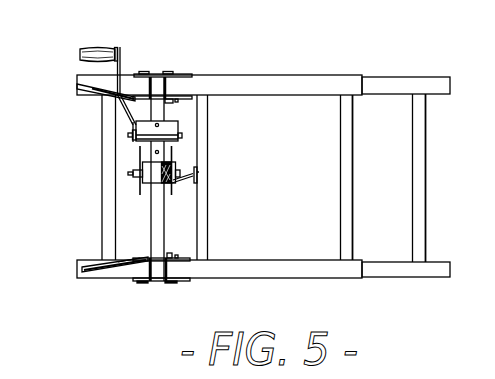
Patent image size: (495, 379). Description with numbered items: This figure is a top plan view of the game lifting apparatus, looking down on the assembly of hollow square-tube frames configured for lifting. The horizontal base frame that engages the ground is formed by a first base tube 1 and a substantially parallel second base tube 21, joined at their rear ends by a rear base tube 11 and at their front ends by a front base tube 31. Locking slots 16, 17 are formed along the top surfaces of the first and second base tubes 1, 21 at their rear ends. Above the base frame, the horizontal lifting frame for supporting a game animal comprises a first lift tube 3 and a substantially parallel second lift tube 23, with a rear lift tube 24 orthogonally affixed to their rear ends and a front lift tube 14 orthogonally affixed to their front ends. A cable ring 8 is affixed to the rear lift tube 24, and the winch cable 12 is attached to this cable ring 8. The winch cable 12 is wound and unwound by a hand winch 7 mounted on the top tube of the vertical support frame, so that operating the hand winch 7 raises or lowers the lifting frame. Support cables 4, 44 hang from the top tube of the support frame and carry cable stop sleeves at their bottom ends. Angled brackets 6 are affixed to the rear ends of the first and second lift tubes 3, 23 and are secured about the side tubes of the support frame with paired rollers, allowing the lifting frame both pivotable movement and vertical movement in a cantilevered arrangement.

The first base tube 1 is at (448, 102).
The first lift tube 3 is at (307, 105).
The support cable 4 is at (89, 103).
The angled bracket 6 is at (194, 289).
The hand winch 7 is at (193, 125).
The cable ring 8 is at (210, 167).
The rear base tube 11 is at (92, 196).
The winch cable 12 is at (186, 193).
The front lift tube 14 is at (332, 189).
The locking slot 16 is at (70, 72).
The locking slot 17 is at (65, 265).
The second base tube 21 is at (423, 289).
The second lift tube 23 is at (287, 251).
The rear lift tube 24 is at (215, 219).
The front base tube 31 is at (435, 200).
The support cable 44 is at (127, 245).